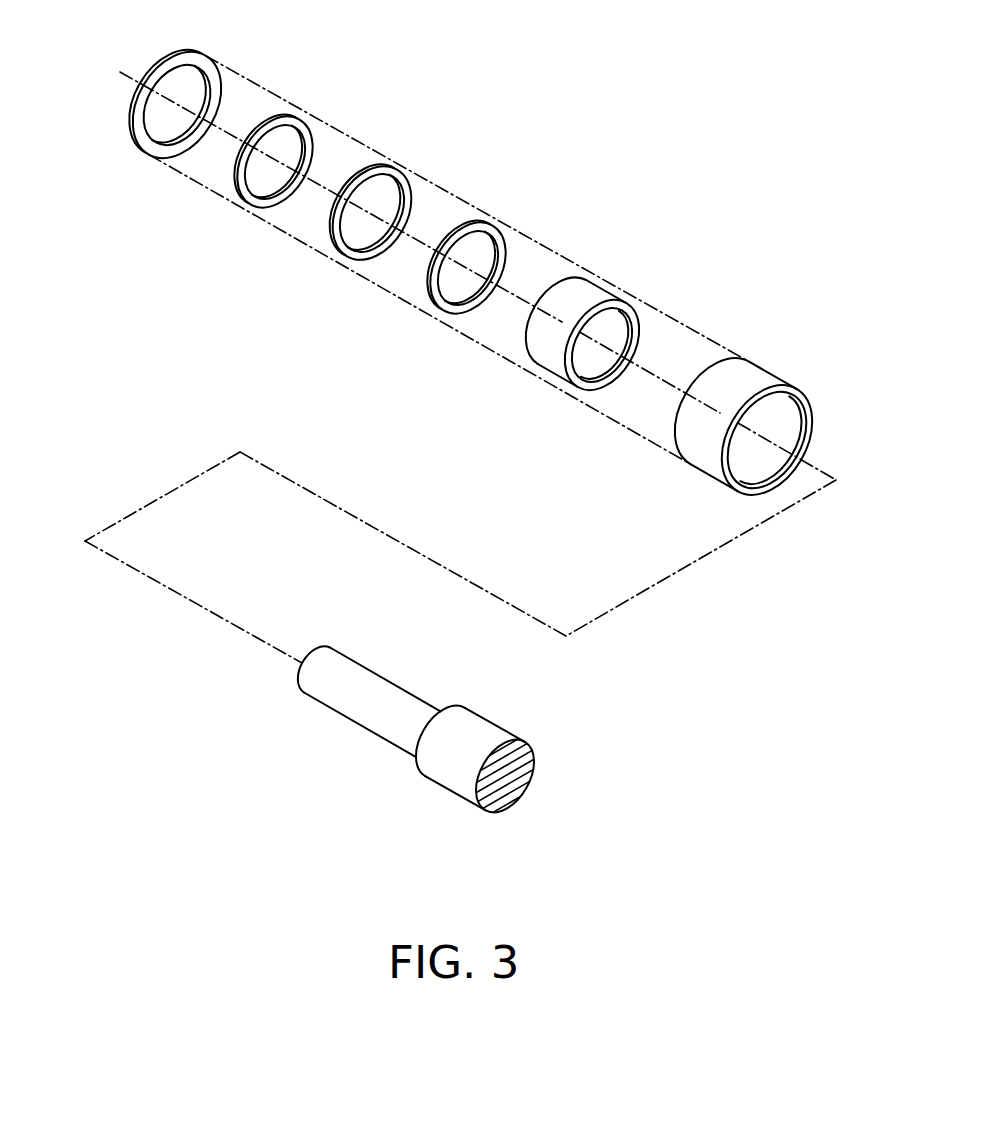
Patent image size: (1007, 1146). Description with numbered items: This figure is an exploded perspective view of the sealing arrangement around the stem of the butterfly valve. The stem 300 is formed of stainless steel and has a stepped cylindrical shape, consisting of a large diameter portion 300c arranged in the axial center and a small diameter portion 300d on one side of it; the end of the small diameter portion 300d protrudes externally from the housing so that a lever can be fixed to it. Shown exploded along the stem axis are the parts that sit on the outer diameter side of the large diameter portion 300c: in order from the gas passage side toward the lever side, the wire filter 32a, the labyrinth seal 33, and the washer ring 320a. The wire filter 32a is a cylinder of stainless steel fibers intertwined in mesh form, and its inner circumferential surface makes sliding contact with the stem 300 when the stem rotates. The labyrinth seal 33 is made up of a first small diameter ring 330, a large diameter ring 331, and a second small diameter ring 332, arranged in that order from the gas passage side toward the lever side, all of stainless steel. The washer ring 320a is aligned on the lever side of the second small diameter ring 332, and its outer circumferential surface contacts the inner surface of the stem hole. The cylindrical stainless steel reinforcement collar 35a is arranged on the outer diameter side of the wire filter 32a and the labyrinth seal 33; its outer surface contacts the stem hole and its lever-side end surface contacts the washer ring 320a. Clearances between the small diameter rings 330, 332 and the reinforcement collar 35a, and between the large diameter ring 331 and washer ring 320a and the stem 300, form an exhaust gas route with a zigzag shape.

The washer ring 320a is at (152, 150).
The second small diameter ring 332 is at (253, 200).
The large diameter ring 331 is at (350, 257).
The first small diameter ring 330 is at (445, 306).
The labyrinth seal 33 is at (332, 224).
The wire filter 32a is at (552, 362).
The reinforcement collar 35a is at (710, 448).
The stem 300 is at (442, 742).
The small diameter portion 300d is at (380, 713).
The large diameter portion 300c is at (462, 778).